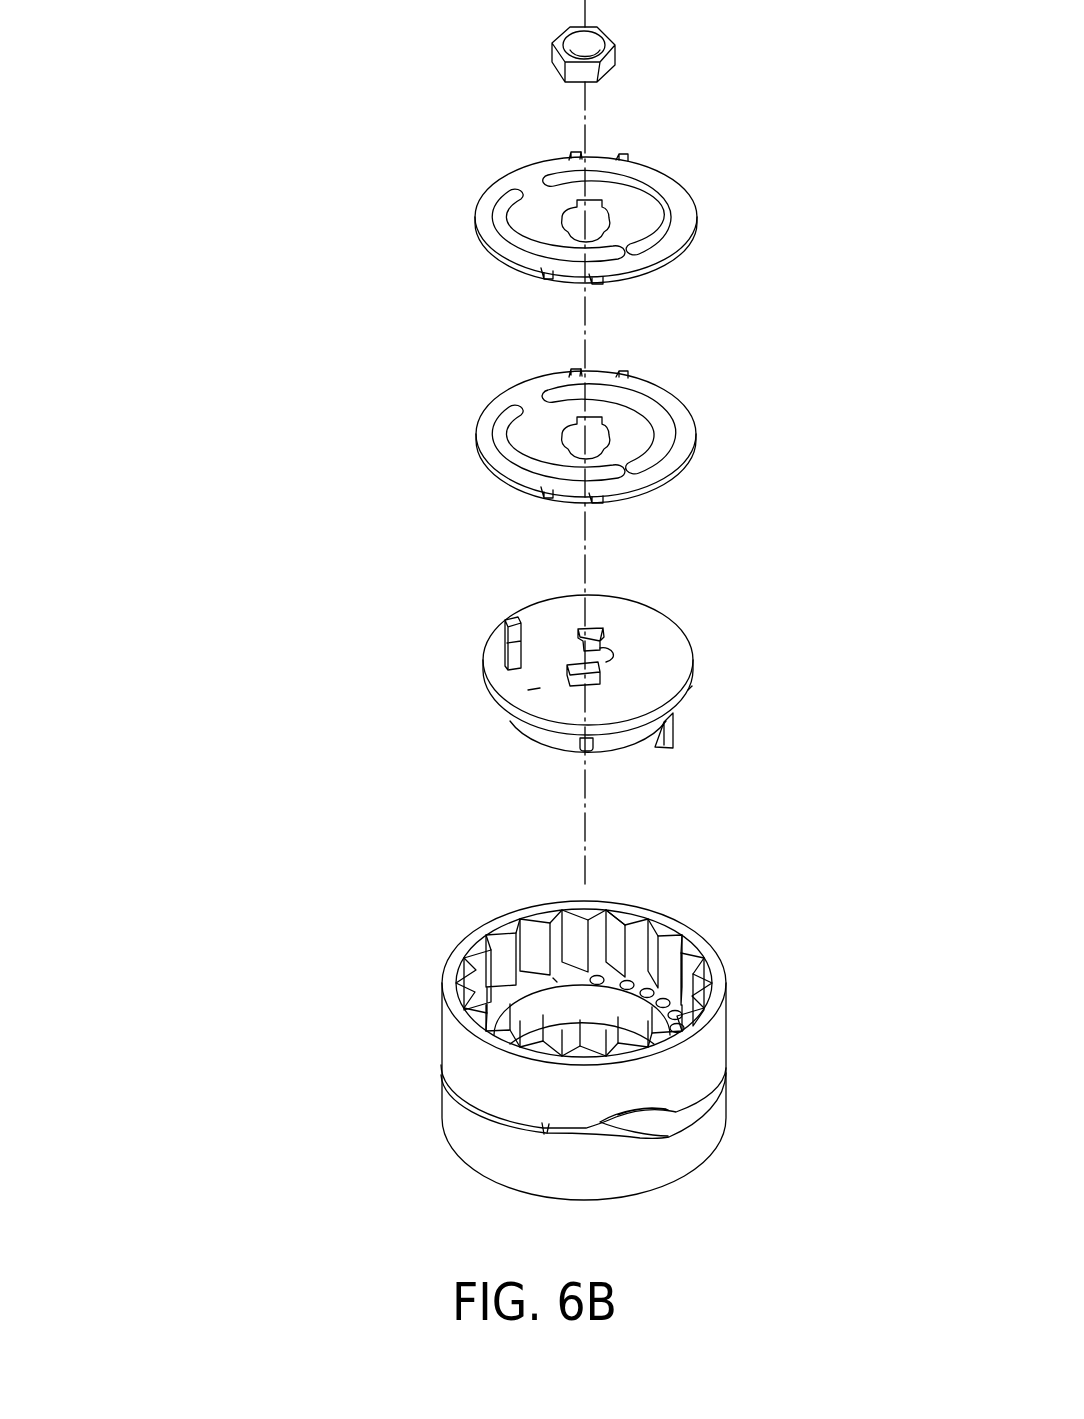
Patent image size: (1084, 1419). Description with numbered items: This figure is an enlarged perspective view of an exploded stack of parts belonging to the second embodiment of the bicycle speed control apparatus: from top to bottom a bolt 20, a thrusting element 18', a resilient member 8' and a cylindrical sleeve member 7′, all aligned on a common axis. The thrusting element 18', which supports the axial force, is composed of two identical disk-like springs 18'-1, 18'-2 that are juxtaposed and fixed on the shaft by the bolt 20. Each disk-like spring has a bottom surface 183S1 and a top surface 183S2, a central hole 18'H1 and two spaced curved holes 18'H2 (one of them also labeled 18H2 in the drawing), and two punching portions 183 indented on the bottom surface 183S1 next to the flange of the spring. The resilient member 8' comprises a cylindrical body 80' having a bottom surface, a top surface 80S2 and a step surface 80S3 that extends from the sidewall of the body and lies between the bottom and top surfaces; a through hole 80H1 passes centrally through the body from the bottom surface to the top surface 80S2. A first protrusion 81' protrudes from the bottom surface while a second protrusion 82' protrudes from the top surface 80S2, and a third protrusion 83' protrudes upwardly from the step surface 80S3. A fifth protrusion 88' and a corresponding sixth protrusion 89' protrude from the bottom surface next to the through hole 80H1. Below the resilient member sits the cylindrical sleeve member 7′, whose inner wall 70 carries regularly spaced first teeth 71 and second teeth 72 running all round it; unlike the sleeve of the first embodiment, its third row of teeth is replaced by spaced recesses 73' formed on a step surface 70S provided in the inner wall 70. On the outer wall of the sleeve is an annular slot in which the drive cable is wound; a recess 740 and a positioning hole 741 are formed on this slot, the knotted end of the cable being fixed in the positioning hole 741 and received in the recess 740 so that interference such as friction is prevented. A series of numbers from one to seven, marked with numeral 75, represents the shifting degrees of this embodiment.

The bolt 20 is at (628, 55).
The punching portion 183 is at (603, 155).
The top surface 183S2 is at (628, 158).
The curved hole 18'H2 is at (693, 325).
The central hole 18'H1 is at (728, 344).
The arcuate slot 18H2 is at (643, 278).
The bottom surface 183S1 is at (615, 372).
The thrusting element 18' is at (515, 284).
The disk-like spring 18'-2 is at (492, 220).
The disk-like spring 18'-1 is at (491, 412).
The resilient member 8' is at (500, 676).
The second protrusion 82' is at (409, 602).
The top surface 80S2 is at (530, 685).
The cylindrical body 80' is at (496, 686).
The sixth protrusion 89' is at (716, 590).
The through hole 80H1 is at (605, 655).
The fifth protrusion 88' is at (710, 651).
The step surface 80S3 is at (690, 690).
The first protrusion 81' is at (754, 720).
The third protrusion 83' is at (717, 781).
The inner wall 70 is at (553, 998).
The step surface 70S is at (555, 980).
The first teeth 71 is at (494, 1030).
The second teeth 72 is at (612, 945).
The recess 73' is at (710, 976).
The cylindrical sleeve member 7′ is at (429, 1071).
The positioning hole 741 is at (546, 1133).
The series of numbers 75 is at (669, 1150).
The recess 740 is at (613, 1137).